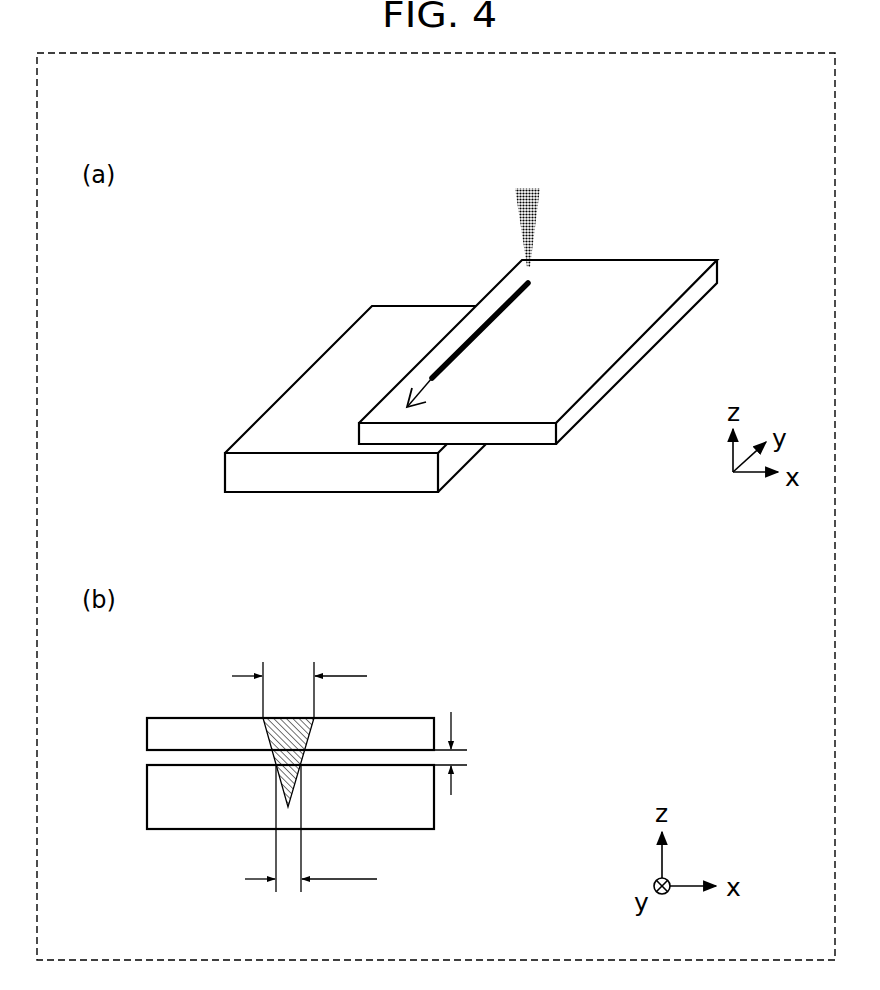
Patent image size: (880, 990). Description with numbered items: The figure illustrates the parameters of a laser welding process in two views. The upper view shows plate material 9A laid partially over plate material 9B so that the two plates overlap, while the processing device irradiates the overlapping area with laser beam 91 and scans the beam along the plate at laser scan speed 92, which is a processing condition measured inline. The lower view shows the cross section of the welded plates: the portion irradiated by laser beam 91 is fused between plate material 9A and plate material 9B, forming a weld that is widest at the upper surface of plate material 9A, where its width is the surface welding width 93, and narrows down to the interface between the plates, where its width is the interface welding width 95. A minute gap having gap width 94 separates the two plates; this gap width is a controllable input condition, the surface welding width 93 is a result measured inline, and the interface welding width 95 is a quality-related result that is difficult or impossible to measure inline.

The plate material 9A is at (715, 276).
The plate material 9B is at (448, 464).
The laser beam 91 is at (548, 152).
The laser scan speed 92 is at (432, 375).
The surface welding width 93 is at (357, 645).
The gap width 94 is at (452, 727).
The interface welding width 95 is at (362, 908).